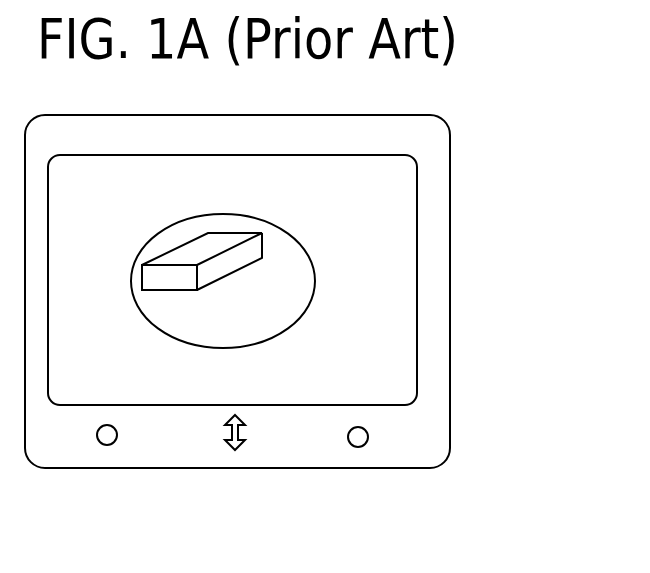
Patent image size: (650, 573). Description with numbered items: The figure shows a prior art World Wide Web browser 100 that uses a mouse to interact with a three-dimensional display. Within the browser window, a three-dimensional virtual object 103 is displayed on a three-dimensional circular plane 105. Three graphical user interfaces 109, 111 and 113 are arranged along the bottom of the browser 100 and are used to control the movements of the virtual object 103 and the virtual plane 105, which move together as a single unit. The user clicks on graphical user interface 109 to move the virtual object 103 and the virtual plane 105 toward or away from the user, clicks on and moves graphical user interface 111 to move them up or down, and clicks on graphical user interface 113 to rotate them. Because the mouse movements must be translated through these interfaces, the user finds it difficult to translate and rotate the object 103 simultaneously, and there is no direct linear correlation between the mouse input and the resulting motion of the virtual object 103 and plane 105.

The World Wide Web browser 100 is at (539, 292).
The three-dimensional virtual object 103 is at (287, 262).
The three-dimensional plane 105 is at (313, 280).
The graphical user interface 109 is at (107, 445).
The graphical user interface 111 is at (235, 450).
The graphical user interface 113 is at (358, 447).